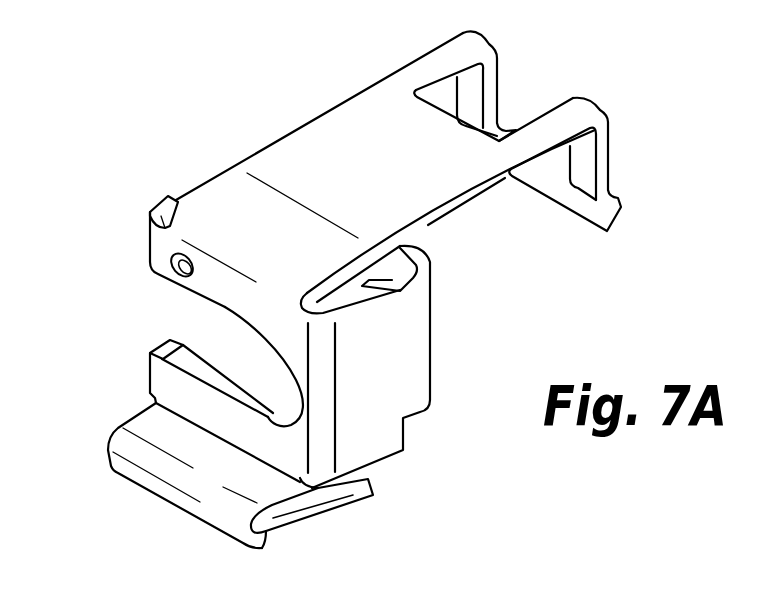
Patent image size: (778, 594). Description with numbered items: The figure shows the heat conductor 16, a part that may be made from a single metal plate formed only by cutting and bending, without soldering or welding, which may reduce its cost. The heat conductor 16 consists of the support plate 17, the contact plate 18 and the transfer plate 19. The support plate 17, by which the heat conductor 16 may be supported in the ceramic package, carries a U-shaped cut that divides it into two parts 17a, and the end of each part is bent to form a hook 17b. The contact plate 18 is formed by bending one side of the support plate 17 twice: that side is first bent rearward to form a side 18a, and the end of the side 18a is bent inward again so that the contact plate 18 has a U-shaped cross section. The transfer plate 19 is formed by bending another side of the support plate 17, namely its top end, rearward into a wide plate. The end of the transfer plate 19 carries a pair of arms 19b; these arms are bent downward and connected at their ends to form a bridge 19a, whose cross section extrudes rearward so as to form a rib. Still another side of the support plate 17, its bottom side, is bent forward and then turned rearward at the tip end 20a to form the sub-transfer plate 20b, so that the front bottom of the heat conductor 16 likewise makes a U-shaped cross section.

The heat conductor 16 is at (150, 112).
The support plate 17 is at (220, 295).
The parts of the support plate 17a is at (243, 302).
The hook 17b is at (160, 203).
The contact plate 18 is at (403, 246).
The side 18a is at (393, 373).
The transfer plate 19 is at (332, 136).
The bridge 19a is at (620, 197).
The arms 19b is at (490, 88).
The tip end 20a is at (160, 483).
The sub-transfer plate 20b is at (350, 505).